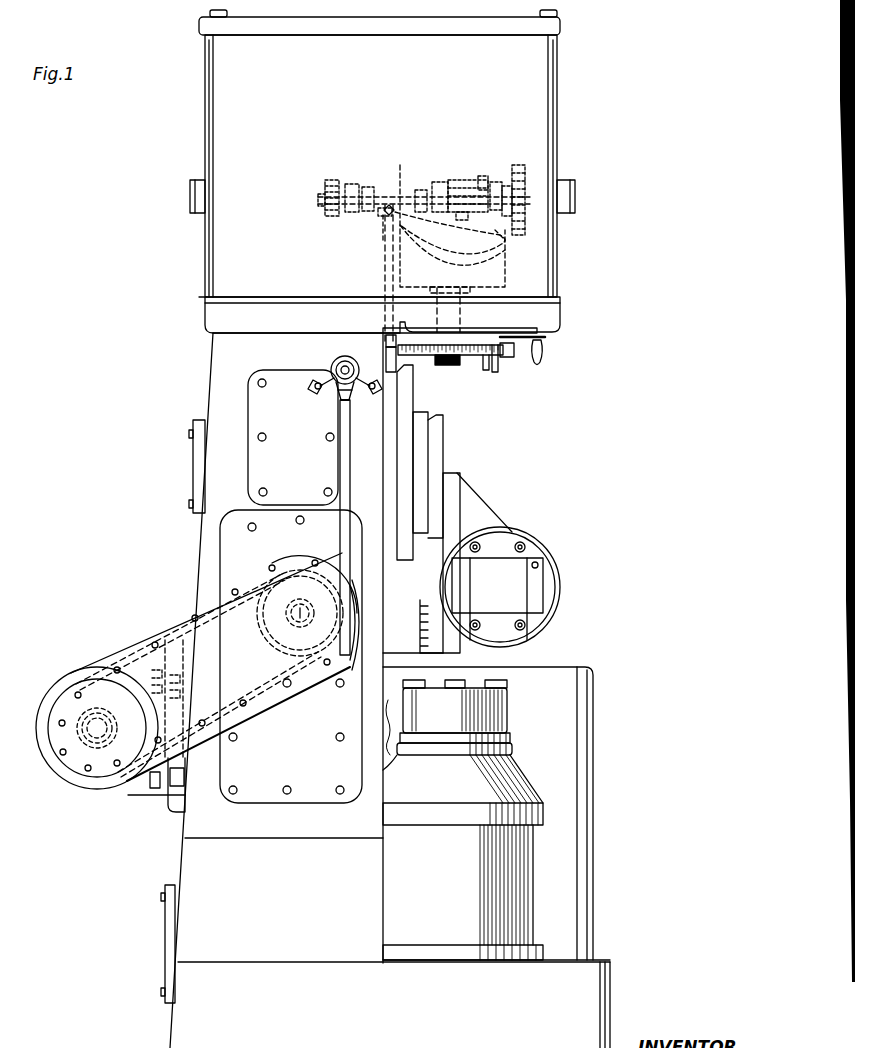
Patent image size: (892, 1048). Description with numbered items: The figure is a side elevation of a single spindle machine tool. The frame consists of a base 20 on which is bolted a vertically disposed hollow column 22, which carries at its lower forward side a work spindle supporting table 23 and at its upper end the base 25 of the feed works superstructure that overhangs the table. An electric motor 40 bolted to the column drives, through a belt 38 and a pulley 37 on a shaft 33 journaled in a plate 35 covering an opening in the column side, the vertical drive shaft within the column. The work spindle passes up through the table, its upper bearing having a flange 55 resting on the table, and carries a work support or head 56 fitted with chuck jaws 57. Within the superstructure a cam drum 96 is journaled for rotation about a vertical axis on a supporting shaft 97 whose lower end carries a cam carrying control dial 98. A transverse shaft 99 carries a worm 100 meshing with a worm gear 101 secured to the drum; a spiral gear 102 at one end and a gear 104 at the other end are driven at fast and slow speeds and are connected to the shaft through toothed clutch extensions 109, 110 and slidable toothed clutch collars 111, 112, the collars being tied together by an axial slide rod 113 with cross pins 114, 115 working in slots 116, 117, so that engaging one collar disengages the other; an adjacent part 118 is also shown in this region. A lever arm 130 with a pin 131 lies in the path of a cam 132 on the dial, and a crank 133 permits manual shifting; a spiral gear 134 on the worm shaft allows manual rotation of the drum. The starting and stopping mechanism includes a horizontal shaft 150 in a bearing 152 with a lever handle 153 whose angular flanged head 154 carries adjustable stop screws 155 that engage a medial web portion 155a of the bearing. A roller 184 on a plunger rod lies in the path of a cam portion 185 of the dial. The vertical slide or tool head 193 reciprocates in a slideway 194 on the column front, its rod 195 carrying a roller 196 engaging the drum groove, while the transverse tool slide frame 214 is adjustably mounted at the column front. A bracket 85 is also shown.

The base 20 is at (190, 926).
The hollow column 22 is at (215, 362).
The work spindle supporting table 23 is at (515, 777).
The base of feed works superstructure 25 is at (205, 305).
The shaft 33 is at (302, 605).
The plate 35 is at (248, 548).
The pulley 37 is at (270, 640).
The belt 38 is at (190, 650).
The electric motor 40 is at (58, 690).
The flange 55 is at (512, 747).
The work support or head 56 is at (508, 708).
The chuck jaws 57 is at (497, 672).
The bracket 85 is at (193, 476).
The cam drum 96 is at (498, 268).
The supporting shaft 97 is at (462, 308).
The cam carrying control dial 98 is at (455, 365).
The transverse shaft 99 is at (420, 190).
The worm 100 is at (462, 182).
The worm gear 101 is at (388, 196).
The spiral gear 102 is at (335, 178).
The gear 104 is at (523, 175).
The toothed clutch extension 109 is at (350, 182).
The toothed clutch extension 110 is at (512, 168).
The toothed clutch collar 111 is at (385, 210).
The toothed clutch collar 112 is at (483, 182).
The axial slide rod 113 is at (440, 185).
The cross pin 114 is at (392, 214).
The cross pin 115 is at (498, 237).
The slot 116 is at (368, 186).
The slot 117 is at (495, 182).
The pawl 118 is at (460, 180).
The lever arm 130 is at (505, 358).
The pin 131 is at (495, 360).
The cam 132 is at (486, 368).
The crank 133 is at (545, 355).
The spiral gear 134 is at (300, 620).
The horizontal shaft 150 is at (332, 364).
The bearing 152 is at (348, 360).
The lever handle 153 is at (350, 466).
The angular flanged head 154 is at (335, 393).
The adjustable stop screws 155 is at (318, 386).
The medial web portion 155a is at (338, 408).
The roller 184 is at (400, 372).
The cam portion 185 is at (422, 358).
The vertical slide or tool head 193 is at (428, 457).
The slideway 194 is at (390, 478).
The rod 195 is at (385, 284).
The roller 196 is at (383, 238).
The tool slide frame 214 is at (490, 520).